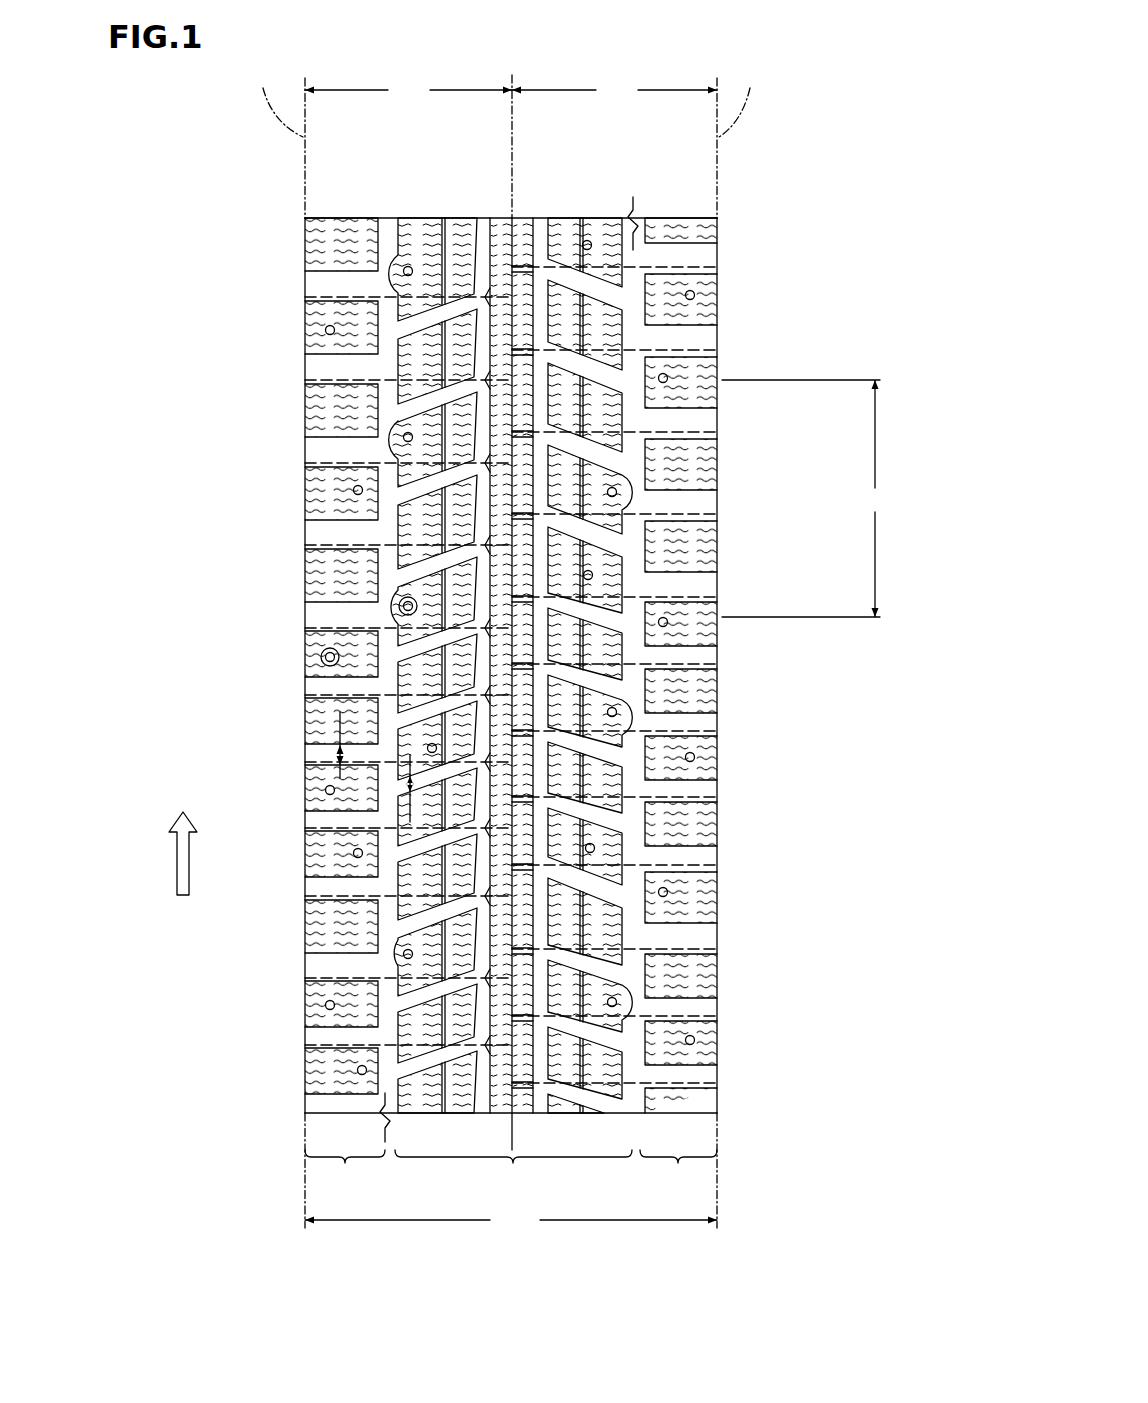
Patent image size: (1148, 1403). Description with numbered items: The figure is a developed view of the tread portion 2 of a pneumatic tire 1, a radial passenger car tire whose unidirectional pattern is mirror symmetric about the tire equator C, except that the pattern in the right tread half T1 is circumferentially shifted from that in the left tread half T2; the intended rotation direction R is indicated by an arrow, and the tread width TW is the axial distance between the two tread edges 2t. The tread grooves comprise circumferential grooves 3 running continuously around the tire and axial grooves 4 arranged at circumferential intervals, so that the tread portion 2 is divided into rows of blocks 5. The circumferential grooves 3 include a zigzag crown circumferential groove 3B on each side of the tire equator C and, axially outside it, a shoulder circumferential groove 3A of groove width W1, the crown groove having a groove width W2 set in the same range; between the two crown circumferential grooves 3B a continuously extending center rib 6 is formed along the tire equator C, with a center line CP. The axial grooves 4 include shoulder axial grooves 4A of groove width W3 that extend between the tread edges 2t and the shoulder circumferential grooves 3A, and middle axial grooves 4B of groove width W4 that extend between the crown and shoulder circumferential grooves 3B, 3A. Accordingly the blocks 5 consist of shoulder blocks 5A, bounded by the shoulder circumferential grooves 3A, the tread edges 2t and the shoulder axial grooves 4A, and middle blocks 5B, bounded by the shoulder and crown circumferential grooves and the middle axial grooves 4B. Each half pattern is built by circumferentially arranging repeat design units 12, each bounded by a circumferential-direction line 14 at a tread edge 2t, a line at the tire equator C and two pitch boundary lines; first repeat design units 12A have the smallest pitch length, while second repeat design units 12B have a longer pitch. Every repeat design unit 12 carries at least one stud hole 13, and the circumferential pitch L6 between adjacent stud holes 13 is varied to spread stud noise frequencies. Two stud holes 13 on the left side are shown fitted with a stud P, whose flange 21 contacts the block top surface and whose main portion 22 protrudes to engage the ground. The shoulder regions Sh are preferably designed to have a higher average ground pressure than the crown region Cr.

The pneumatic tire 1 is at (770, 163).
The tread portion 2 is at (773, 207).
The tread edge 2t is at (719, 1162).
The circumferential-direction line 14 is at (524, 97).
The circumferential grooves 3 is at (465, 143).
The shoulder circumferential groove 3A is at (393, 242).
The crown circumferential groove 3B is at (486, 242).
The axial grooves 4 is at (196, 518).
The shoulder axial groove 4A is at (330, 540).
The middle axial groove 4B is at (397, 601).
The blocks 5 is at (824, 507).
The shoulder block 5A is at (314, 247).
The middle block 5B is at (389, 282).
The center rib 6 is at (520, 243).
The repeat design unit 12 is at (734, 947).
The first repeat design unit 12A is at (734, 1081).
The second repeat design unit 12B is at (296, 898).
The stud hole 13 is at (327, 331).
The flange 21 is at (323, 660).
The main portion 22 is at (323, 655).
The stud P is at (398, 607).
The groove width of shoulder circumferential groove W1 is at (632, 665).
The groove width of crown circumferential groove W2 is at (549, 550).
The groove width of shoulder axial groove W3 is at (337, 749).
The groove width of middle axial groove W4 is at (404, 790).
The circumferential pitch between stud holes L6 is at (804, 498).
The right tread half T1 is at (614, 91).
The left tread half T2 is at (408, 91).
The tread width TW is at (511, 1219).
The tire equator C is at (495, 600).
The center line CP is at (520, 134).
The shoulder region Sh is at (511, 695).
The crown region Cr is at (513, 1171).
The rotation direction R is at (173, 853).